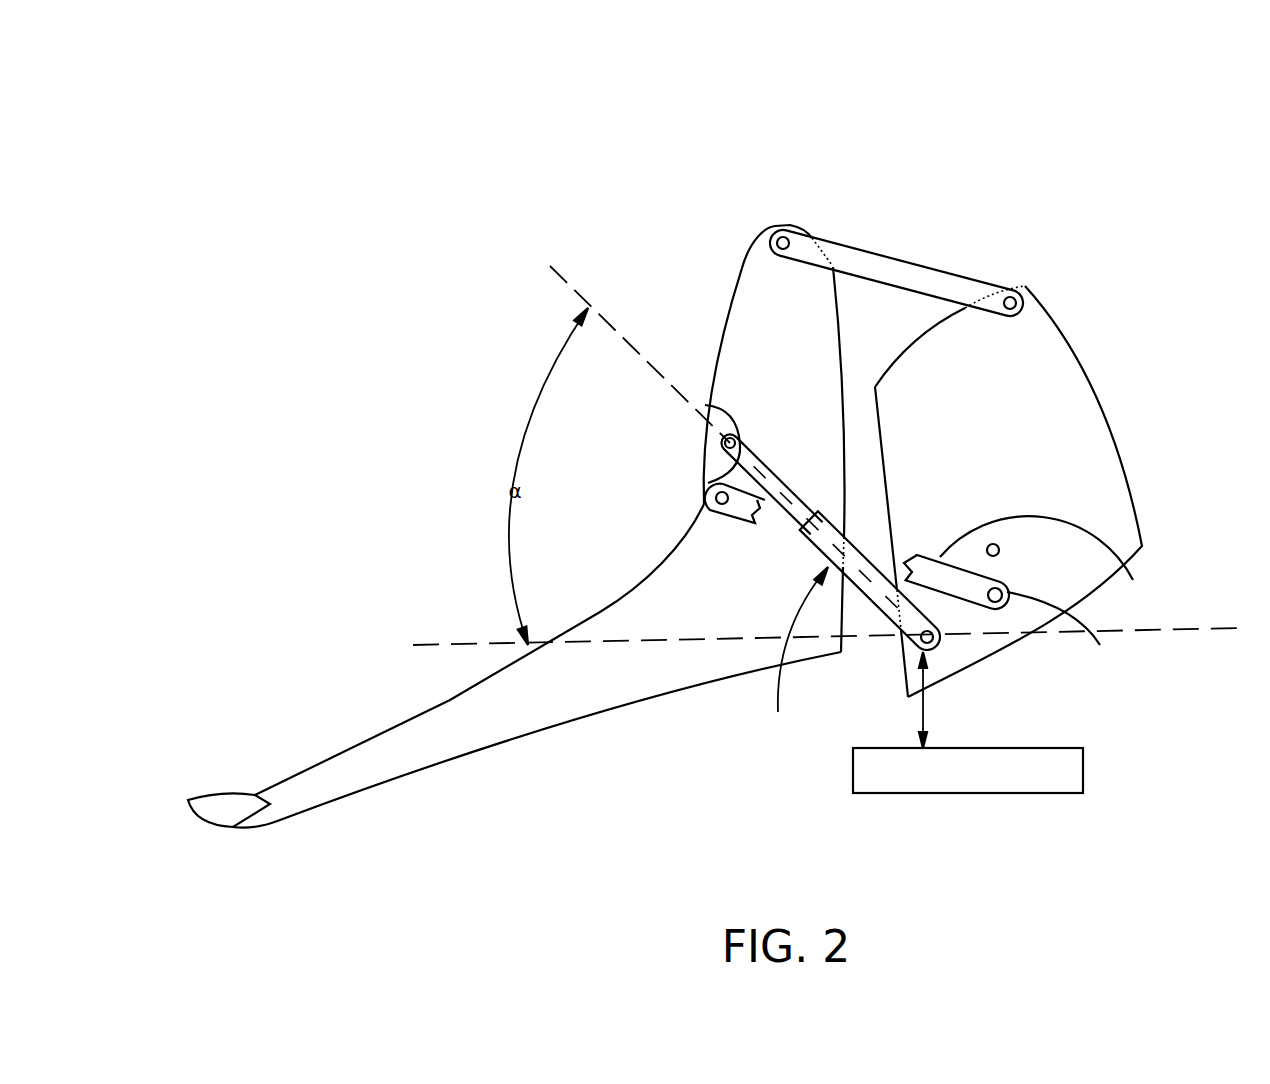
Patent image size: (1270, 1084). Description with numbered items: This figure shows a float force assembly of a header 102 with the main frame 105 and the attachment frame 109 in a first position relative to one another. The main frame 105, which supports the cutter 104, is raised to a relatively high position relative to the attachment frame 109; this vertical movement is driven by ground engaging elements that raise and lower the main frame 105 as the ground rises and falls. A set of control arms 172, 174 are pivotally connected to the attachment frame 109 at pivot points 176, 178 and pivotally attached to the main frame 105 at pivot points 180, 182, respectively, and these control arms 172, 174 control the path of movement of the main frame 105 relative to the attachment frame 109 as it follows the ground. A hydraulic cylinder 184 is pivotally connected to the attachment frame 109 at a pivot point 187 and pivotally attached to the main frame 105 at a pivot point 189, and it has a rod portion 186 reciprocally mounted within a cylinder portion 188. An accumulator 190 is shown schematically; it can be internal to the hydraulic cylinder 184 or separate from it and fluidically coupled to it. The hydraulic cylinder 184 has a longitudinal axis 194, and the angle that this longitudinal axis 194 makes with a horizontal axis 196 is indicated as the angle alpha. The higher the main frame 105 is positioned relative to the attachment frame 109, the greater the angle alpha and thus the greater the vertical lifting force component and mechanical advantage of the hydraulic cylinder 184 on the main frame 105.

The header 102 is at (748, 120).
The cutter 104 is at (220, 793).
The main frame 105 is at (602, 707).
The attachment frame 109 is at (1124, 458).
The control arm 172 is at (907, 257).
The control arm 174 is at (1046, 561).
The pivot point 176 is at (1022, 284).
The pivot point 178 is at (1010, 612).
The pivot point 180 is at (790, 225).
The pivot point 182 is at (708, 499).
The hydraulic cylinder 184 is at (791, 657).
The rod portion 186 is at (777, 475).
The pivot point 187 is at (935, 650).
The cylinder portion 188 is at (837, 523).
The pivot point 189 is at (731, 434).
The accumulator 190 is at (968, 722).
The longitudinal axis 194 is at (562, 272).
The horizontal axis 196 is at (429, 645).